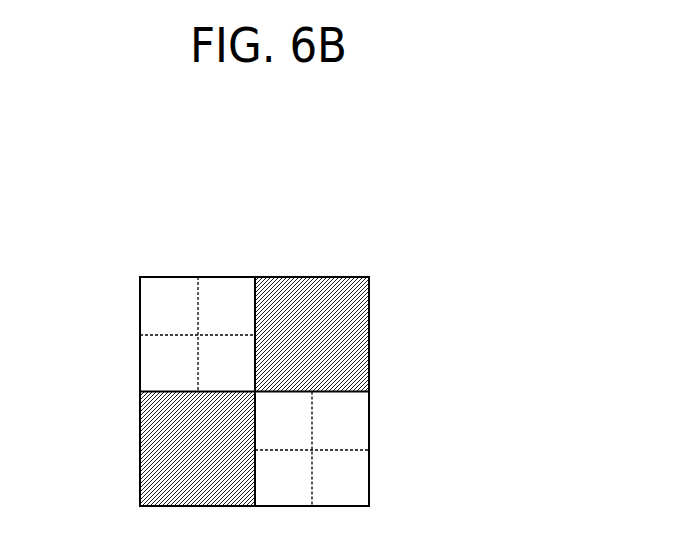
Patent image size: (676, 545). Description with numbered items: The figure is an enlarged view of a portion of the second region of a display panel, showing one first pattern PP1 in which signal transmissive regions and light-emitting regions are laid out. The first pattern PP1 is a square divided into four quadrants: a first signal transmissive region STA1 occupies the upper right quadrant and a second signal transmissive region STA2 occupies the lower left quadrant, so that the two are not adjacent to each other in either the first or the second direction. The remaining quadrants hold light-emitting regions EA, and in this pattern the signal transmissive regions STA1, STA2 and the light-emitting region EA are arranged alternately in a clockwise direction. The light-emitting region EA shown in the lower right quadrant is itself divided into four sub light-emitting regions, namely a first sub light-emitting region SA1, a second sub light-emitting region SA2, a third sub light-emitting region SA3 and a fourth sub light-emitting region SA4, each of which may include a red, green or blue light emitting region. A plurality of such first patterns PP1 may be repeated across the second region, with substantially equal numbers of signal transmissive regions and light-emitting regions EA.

The first pattern PP1 is at (413, 211).
The first signal transmissive region STA1 is at (316, 289).
The second signal transmissive region STA2 is at (152, 443).
The light-emitting region EA is at (458, 393).
The first sub light-emitting region SA1 is at (361, 404).
The second sub light-emitting region SA2 is at (303, 430).
The third sub light-emitting region SA3 is at (361, 461).
The fourth sub light-emitting region SA4 is at (303, 488).